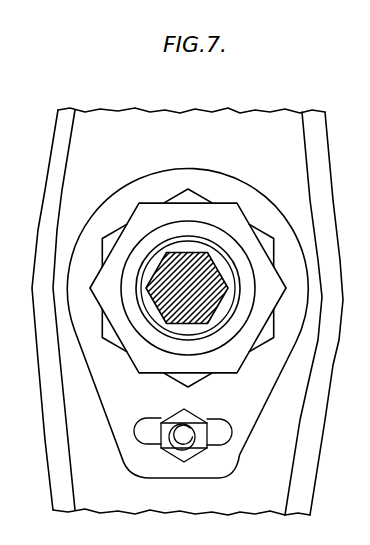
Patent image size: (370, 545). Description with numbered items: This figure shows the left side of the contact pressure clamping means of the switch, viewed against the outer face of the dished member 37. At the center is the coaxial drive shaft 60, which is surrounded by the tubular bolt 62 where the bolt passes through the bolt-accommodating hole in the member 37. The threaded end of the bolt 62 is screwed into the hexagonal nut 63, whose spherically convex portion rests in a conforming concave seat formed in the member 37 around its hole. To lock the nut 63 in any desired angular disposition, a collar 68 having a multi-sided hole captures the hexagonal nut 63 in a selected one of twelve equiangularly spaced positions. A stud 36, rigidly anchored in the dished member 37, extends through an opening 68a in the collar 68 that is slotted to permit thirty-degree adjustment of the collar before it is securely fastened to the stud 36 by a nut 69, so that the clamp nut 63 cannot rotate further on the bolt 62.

The dished member 37 is at (317, 147).
The collar 68 is at (275, 372).
The nut 63 is at (153, 212).
The tubular bolt 62 is at (222, 242).
The drive shaft 60 is at (157, 322).
The stud 36 is at (185, 429).
The nut 69 is at (193, 453).
The opening 68a is at (147, 438).